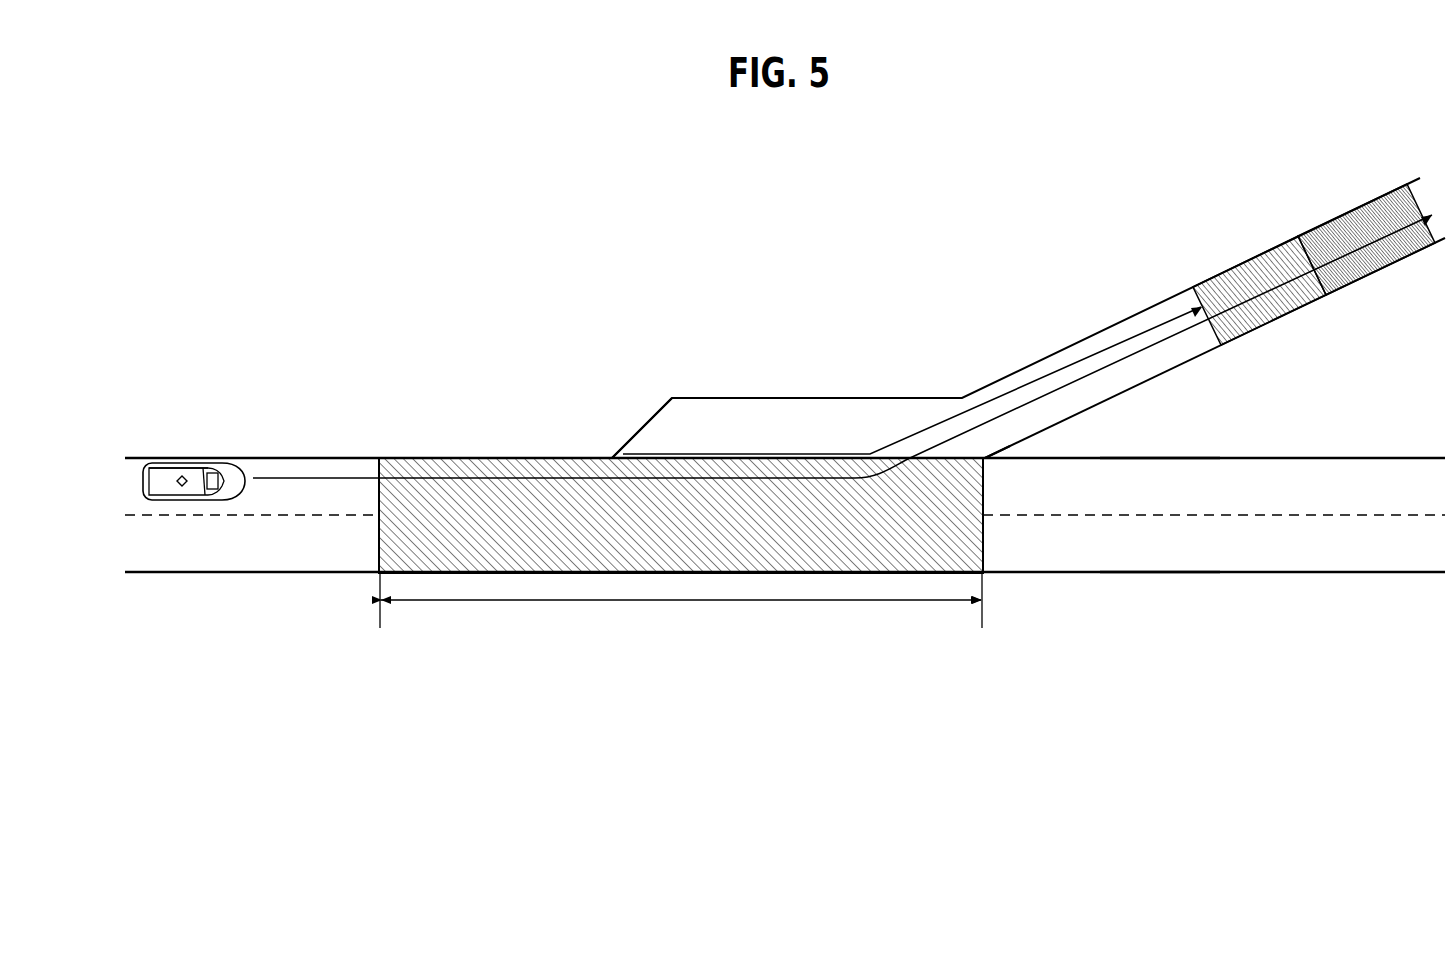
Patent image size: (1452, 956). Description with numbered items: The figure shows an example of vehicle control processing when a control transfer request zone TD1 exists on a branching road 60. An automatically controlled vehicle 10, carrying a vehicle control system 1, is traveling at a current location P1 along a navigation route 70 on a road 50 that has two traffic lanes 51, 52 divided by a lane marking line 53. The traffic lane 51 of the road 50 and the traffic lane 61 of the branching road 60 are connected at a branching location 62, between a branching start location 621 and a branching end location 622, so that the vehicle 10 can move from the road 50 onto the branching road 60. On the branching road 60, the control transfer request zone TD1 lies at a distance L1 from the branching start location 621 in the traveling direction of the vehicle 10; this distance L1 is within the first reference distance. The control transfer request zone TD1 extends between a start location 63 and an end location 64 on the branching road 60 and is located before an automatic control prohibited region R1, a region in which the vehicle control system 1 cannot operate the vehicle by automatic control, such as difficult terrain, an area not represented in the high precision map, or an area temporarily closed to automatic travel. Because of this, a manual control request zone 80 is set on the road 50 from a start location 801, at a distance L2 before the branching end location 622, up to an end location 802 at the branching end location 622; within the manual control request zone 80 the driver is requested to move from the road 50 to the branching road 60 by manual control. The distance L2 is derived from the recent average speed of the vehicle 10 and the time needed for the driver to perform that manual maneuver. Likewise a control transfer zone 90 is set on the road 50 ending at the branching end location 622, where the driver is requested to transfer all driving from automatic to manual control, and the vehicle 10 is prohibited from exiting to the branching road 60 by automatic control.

The vehicle control system 1 is at (214, 463).
The automatically controlled vehicle 10 is at (165, 466).
The current location P1 is at (183, 474).
The navigation route 70 is at (325, 478).
The manual control request zone 80 is at (388, 538).
The control transfer zone 90 is at (681, 515).
The start location 801 is at (379, 632).
The end location 802 is at (982, 633).
The distance L2 is at (681, 627).
The distance L1 is at (710, 441).
The road 50 is at (1228, 457).
The traffic lane 51 is at (1176, 500).
The traffic lane 52 is at (1176, 560).
The lane marking line 53 is at (1228, 515).
The branching road 60 is at (1057, 348).
The traffic lane 61 is at (855, 443).
The branching location 62 is at (762, 395).
The branching start location 621 is at (610, 456).
The branching end location 622 is at (984, 462).
The start location 63 is at (1195, 293).
The end location 64 is at (1298, 238).
The control transfer request zone TD1 is at (1253, 267).
The automatic control prohibited region R1 is at (1372, 208).